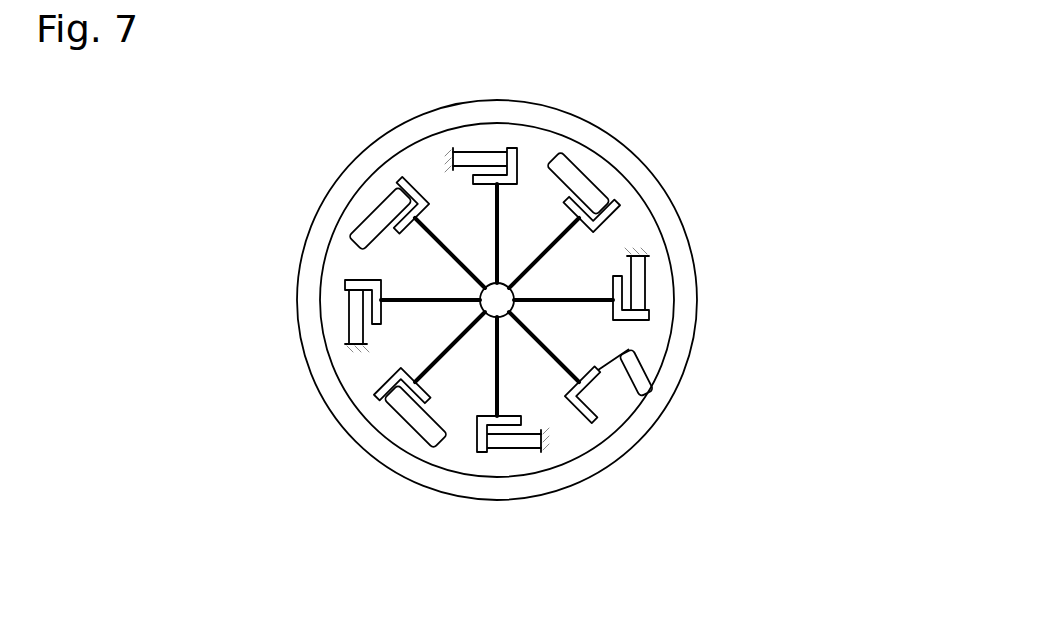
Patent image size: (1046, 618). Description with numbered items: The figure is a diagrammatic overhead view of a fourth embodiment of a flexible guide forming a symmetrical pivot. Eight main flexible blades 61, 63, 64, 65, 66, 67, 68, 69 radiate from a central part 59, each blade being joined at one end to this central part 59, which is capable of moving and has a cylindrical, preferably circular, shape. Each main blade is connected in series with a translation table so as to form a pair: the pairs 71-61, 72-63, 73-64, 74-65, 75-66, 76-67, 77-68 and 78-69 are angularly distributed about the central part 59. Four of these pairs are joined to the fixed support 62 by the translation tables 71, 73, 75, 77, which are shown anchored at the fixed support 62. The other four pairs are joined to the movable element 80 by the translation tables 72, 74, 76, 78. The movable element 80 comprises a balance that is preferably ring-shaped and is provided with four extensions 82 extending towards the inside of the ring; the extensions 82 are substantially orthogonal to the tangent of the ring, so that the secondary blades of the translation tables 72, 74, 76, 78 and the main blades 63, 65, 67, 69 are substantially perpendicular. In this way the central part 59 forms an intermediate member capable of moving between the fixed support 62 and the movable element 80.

The central part 59 is at (499, 302).
The main flexible blade 61 is at (494, 216).
The fixed support 62 is at (450, 160).
The main flexible blade 63 is at (455, 263).
The main flexible blade 64 is at (410, 312).
The main flexible blade 65 is at (447, 348).
The main flexible blade 66 is at (504, 388).
The main flexible blade 67 is at (548, 338).
The main flexible blade 68 is at (650, 260).
The main flexible blade 69 is at (614, 212).
The translation table 71 is at (430, 155).
The translation table 72 is at (373, 208).
The translation table 73 is at (349, 359).
The translation table 74 is at (397, 419).
The translation table 75 is at (564, 444).
The translation table 76 is at (619, 387).
The translation table 77 is at (644, 251).
The translation table 78 is at (596, 192).
The movable element 80 is at (691, 384).
The extensions 82 is at (558, 152).